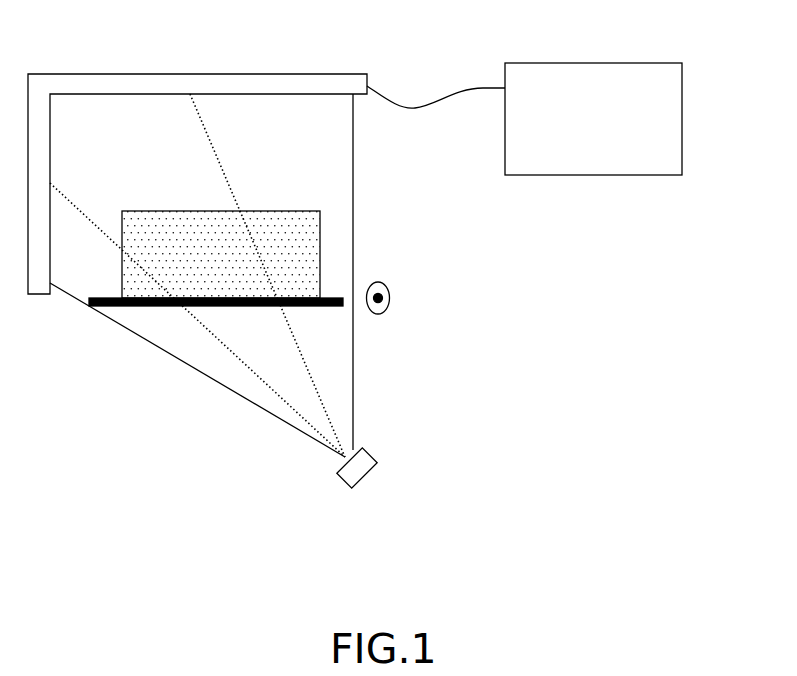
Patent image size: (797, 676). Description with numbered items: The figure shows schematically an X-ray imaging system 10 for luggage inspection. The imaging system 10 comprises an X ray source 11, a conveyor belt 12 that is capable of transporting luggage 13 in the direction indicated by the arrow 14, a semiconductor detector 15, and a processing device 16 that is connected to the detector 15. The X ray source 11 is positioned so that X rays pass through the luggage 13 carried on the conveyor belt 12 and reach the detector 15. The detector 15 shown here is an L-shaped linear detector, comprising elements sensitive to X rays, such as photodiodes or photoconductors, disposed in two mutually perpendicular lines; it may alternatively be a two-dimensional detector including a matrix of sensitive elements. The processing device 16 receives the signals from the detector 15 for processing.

The X-ray imaging system 10 is at (721, 402).
The X ray source 11 is at (373, 462).
The conveyor belt 12 is at (104, 313).
The luggage 13 is at (267, 211).
The arrow 14 is at (389, 286).
The semiconductor detector 15 is at (270, 74).
The processing device 16 is at (682, 128).